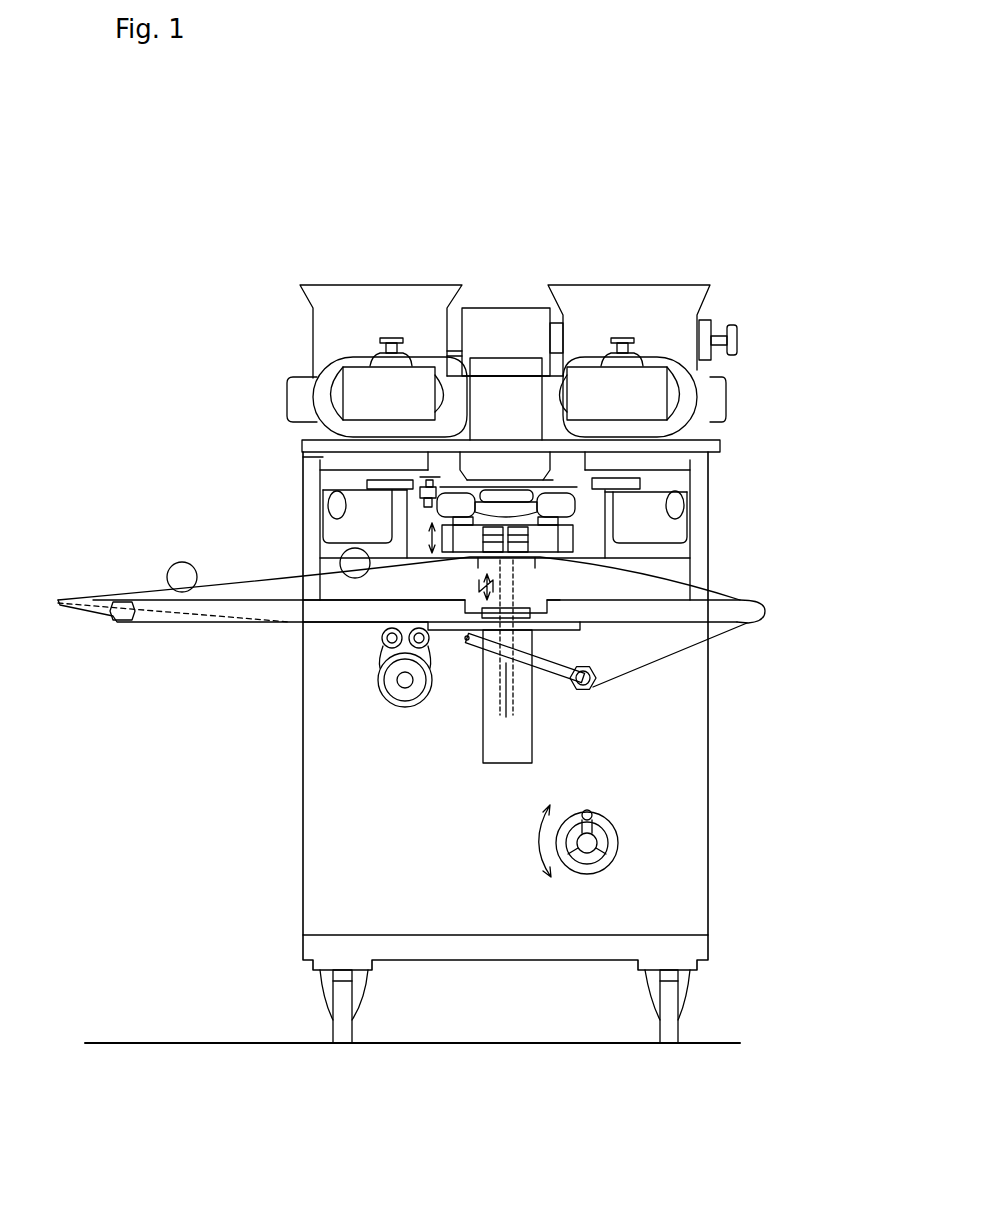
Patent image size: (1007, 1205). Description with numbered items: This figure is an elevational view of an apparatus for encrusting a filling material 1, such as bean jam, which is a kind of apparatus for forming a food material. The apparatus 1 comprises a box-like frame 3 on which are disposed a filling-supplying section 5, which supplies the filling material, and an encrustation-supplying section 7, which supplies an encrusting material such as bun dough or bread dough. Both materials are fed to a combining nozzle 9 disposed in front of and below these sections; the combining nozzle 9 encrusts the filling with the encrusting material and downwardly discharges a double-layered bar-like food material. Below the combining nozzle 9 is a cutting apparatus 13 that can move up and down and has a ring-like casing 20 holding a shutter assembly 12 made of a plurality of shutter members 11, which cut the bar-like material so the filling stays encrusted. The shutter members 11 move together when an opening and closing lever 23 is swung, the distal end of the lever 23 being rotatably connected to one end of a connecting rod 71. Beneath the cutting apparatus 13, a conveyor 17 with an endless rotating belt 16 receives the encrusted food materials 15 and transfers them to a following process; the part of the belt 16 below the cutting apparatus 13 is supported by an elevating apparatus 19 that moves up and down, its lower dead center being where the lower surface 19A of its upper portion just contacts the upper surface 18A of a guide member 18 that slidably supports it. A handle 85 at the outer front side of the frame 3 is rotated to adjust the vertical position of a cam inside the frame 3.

The apparatus for encrusting a filling material 1 is at (732, 307).
The frame 3 is at (653, 783).
The filling-supplying section 5 is at (390, 318).
The encrustation-supplying section 7 is at (657, 335).
The combining nozzle 9 is at (503, 410).
The shutter members 11 is at (570, 541).
The shutter assembly 12 is at (580, 535).
The cutting apparatus 13 is at (578, 517).
The encrusted food materials 15 is at (183, 573).
The belt 16 is at (260, 577).
The conveyor 17 is at (197, 607).
The guide member 18 is at (522, 735).
The upper surface of guide member 18A is at (560, 597).
The elevating apparatus 19 is at (507, 584).
The lower surface of upper portion of elevating apparatus 19A is at (480, 562).
The casing 20 is at (560, 496).
The opening and closing lever 23 is at (323, 457).
The connecting rod 71 is at (422, 488).
The handle 85 is at (613, 842).